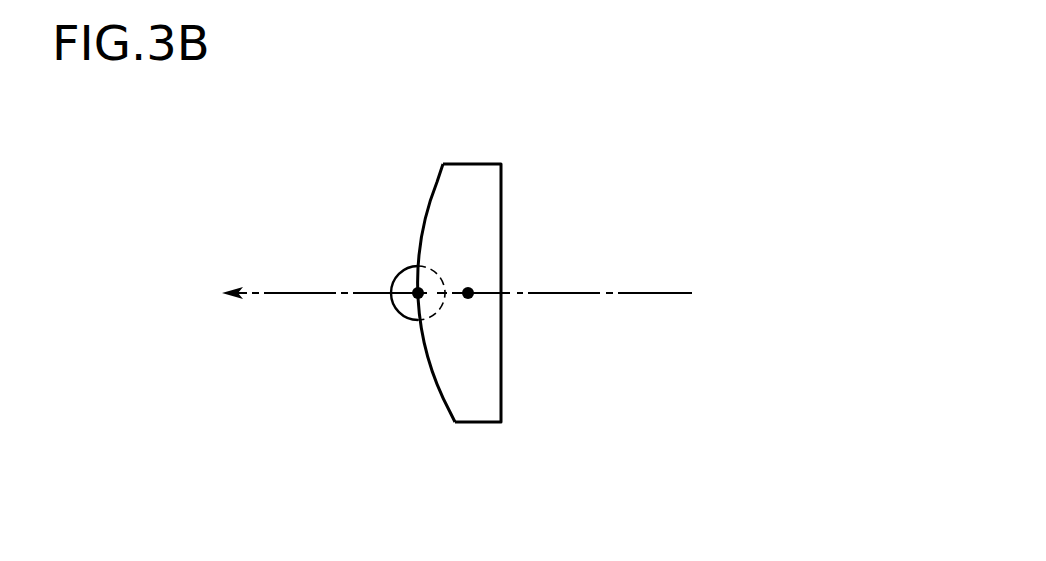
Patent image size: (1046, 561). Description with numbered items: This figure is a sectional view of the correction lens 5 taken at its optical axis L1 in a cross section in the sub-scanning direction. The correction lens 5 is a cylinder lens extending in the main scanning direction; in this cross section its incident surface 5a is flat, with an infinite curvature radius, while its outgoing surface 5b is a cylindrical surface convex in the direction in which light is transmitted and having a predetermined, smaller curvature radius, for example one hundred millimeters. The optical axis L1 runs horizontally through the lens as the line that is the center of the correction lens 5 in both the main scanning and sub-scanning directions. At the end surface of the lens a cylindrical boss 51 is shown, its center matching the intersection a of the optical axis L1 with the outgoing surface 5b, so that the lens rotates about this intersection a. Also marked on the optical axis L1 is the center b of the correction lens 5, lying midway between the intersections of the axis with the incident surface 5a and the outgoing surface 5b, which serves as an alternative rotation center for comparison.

The correction lens 5 is at (467, 238).
The incident surface 5a is at (503, 187).
The outgoing surface 5b is at (437, 182).
The boss 51 is at (407, 276).
The intersection a is at (417, 294).
The center b is at (469, 299).
The optical axis L1 is at (635, 294).